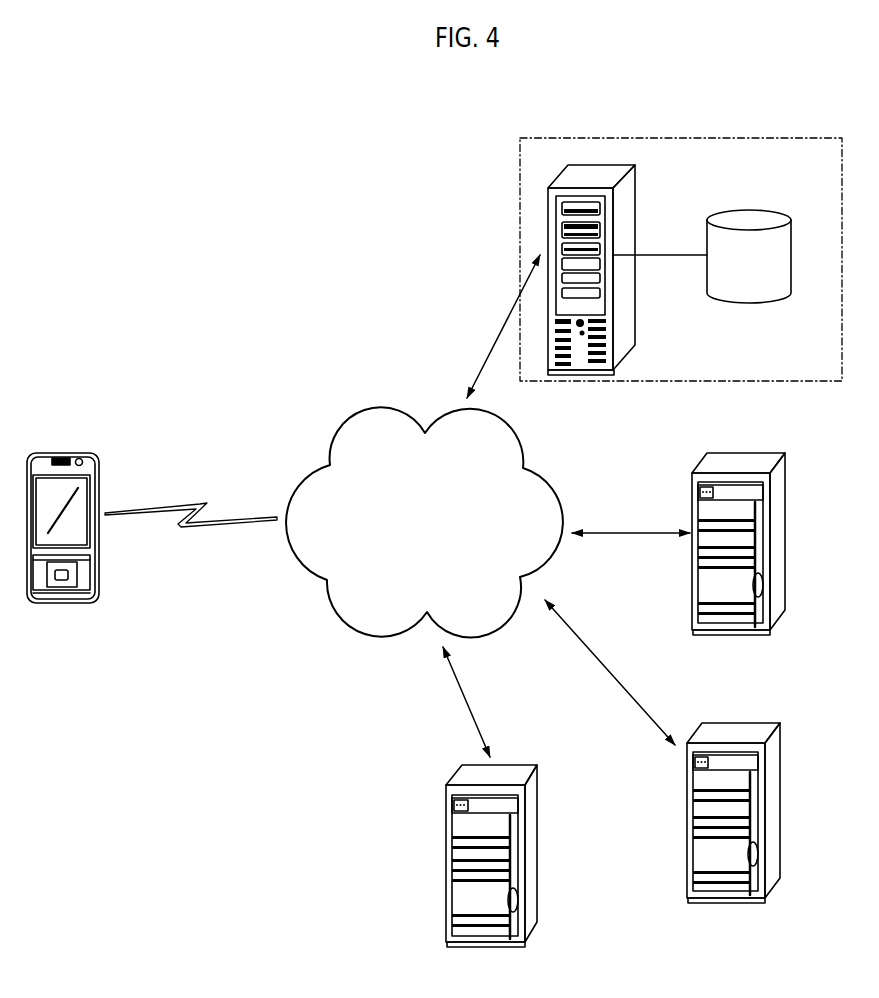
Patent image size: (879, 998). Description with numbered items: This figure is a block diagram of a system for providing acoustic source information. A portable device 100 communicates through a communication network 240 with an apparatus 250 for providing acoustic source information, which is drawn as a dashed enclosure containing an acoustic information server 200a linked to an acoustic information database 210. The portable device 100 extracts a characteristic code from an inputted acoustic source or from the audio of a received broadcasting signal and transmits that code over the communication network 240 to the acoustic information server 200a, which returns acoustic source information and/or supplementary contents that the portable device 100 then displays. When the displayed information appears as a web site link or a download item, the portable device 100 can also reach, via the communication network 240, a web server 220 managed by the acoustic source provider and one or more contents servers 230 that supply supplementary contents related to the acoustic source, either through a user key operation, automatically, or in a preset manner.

The portable device 100 is at (86, 454).
The acoustic information server 200a is at (625, 163).
The acoustic information database 210 is at (768, 210).
The web server 220 is at (538, 850).
The contents server 230 is at (785, 487).
The communication network 240 is at (560, 480).
The apparatus for providing acoustic source information 250 is at (740, 137).